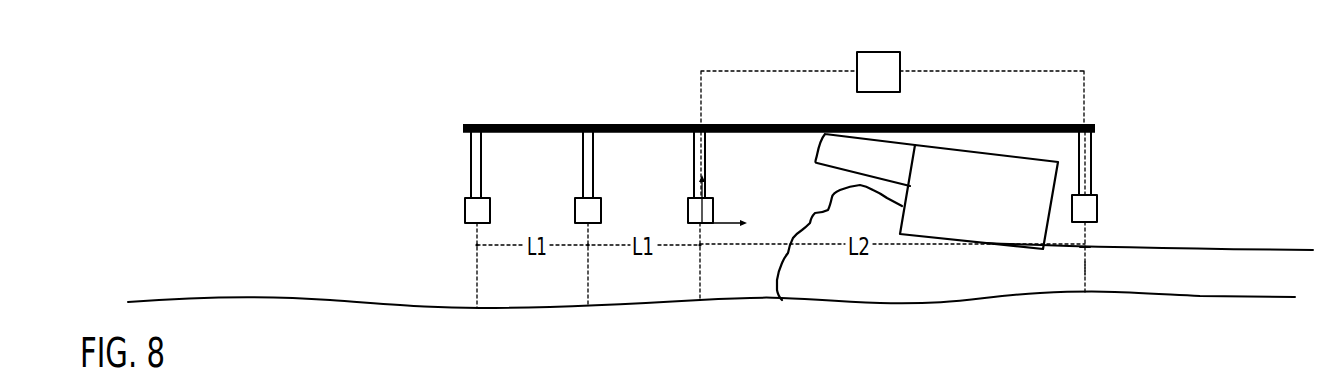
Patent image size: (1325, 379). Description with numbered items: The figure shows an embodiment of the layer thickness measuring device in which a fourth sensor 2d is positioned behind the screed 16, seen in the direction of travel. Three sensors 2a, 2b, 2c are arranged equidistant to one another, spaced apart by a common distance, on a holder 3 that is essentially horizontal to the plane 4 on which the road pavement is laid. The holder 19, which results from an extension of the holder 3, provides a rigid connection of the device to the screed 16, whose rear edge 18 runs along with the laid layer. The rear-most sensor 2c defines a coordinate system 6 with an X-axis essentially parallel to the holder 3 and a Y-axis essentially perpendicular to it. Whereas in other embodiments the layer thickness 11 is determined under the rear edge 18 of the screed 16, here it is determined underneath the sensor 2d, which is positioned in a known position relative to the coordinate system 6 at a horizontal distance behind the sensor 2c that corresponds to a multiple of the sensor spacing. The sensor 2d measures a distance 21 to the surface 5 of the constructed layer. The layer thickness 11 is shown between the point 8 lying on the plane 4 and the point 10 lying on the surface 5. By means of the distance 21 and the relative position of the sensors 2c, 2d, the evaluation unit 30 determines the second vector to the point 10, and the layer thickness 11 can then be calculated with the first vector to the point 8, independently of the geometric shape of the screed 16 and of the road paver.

The holder 3 is at (469, 124).
The holder 19 is at (757, 123).
The evaluation unit 30 is at (878, 58).
The sensor 2a is at (468, 223).
The sensor 2b is at (578, 224).
The sensor 2c is at (689, 224).
The fourth sensor 2d is at (1072, 223).
The coordinate system 6 is at (702, 223).
The screed 16 is at (1043, 155).
The rear edge 18 is at (1046, 249).
The plane 4 is at (348, 302).
The surface 5 is at (1180, 248).
The distance 21 is at (1090, 233).
The point 10 is at (1088, 249).
The point 8 is at (1085, 293).
The layer thickness 11 is at (1088, 263).